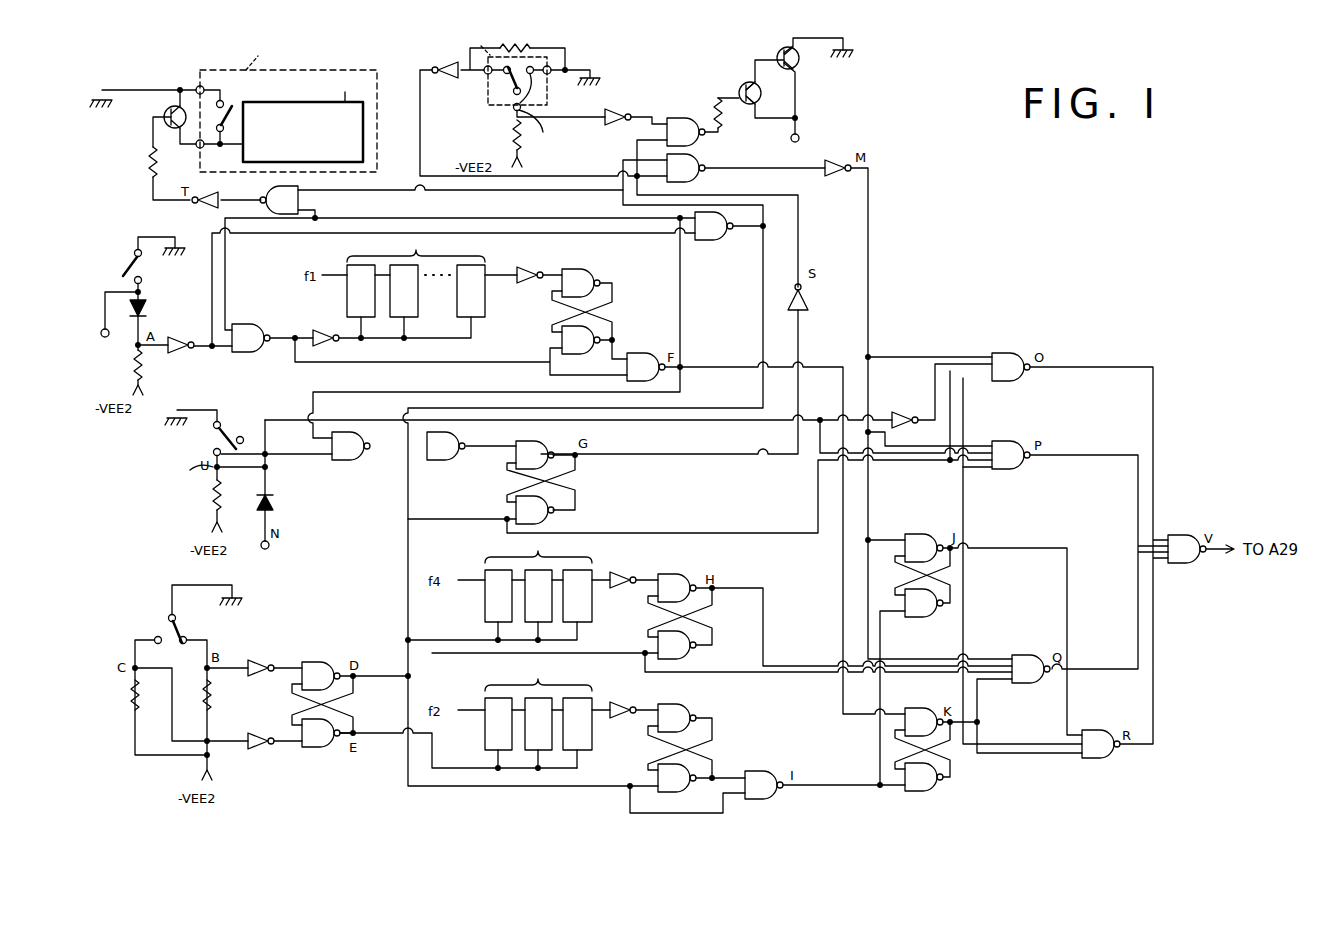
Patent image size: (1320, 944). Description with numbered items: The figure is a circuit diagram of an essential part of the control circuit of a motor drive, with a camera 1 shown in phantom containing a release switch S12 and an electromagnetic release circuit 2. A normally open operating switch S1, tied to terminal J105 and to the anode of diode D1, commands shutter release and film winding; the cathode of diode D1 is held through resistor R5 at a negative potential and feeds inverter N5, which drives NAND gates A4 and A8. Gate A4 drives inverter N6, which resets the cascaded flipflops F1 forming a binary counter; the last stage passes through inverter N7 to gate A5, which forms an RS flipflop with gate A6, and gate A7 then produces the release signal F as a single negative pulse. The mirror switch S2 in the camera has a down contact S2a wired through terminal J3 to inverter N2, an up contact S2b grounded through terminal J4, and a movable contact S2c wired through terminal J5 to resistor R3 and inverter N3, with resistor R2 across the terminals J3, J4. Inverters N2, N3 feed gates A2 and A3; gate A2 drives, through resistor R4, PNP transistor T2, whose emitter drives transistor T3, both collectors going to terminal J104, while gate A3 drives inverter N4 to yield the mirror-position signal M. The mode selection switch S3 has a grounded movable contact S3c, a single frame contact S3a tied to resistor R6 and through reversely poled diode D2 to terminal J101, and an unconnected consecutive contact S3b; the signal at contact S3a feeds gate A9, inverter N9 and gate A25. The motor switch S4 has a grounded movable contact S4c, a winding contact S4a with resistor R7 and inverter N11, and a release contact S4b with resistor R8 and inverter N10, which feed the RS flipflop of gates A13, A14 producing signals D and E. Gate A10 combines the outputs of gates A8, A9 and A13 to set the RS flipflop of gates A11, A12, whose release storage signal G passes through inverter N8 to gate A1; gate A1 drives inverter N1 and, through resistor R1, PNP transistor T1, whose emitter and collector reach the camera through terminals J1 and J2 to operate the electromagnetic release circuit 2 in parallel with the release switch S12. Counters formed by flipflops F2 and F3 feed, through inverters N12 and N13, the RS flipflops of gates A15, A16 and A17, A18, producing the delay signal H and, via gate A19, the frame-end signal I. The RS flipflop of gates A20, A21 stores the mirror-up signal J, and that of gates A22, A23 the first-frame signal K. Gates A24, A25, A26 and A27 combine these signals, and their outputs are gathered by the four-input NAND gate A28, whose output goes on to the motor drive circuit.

The camera 1 is at (373, 100).
The electromagnetic release circuit 2 is at (303, 122).
The terminal J1 is at (186, 82).
The terminal J2 is at (186, 150).
The terminal J3 is at (484, 66).
The terminal J4 is at (551, 66).
The terminal J5 is at (507, 109).
The terminal J101 is at (264, 557).
The terminal J104 is at (786, 148).
The terminal J105 is at (106, 344).
The operating switch S1 is at (128, 266).
The release switch S12 is at (226, 103).
The mirror switch S2 is at (500, 110).
The down contact S2a is at (503, 90).
The up contact S2b is at (538, 86).
The movable contact S2c is at (536, 130).
The photographing mode selection switch S3 is at (234, 424).
The single frame contact S3a is at (186, 467).
The consecutive mode contact S3b is at (244, 435).
The movable contact S3c is at (213, 452).
The motor switch S4 is at (154, 622).
The winding contact S4a is at (155, 636).
The release contact S4b is at (186, 638).
The movable contact S4c is at (189, 609).
The PNP transistor T1 is at (165, 112).
The PNP transistor T2 is at (741, 86).
The PNP transistor T3 is at (799, 64).
The resistor R1 is at (148, 158).
The resistor R2 is at (522, 46).
The resistor R3 is at (512, 142).
The resistor R4 is at (722, 128).
The resistor R5 is at (143, 374).
The resistor R6 is at (212, 496).
The resistor R7 is at (130, 700).
The resistor R8 is at (212, 702).
The diode D1 is at (142, 306).
The reversely poled diode D2 is at (274, 504).
The bank of flipflops F1 is at (416, 277).
The bank of flipflops F2 is at (538, 581).
The bank of flipflops F3 is at (538, 709).
The inverter N1 is at (210, 208).
The inverter N2 is at (441, 81).
The inverter N3 is at (612, 110).
The inverter N4 is at (836, 162).
The inverter N5 is at (181, 334).
The inverter N6 is at (319, 325).
The inverter N7 is at (522, 288).
The inverter N8 is at (805, 298).
The inverter N9 is at (898, 416).
The inverter N10 is at (256, 664).
The inverter N11 is at (256, 737).
The inverter N12 is at (615, 592).
The inverter N13 is at (615, 722).
The NAND gate A1 is at (268, 188).
The three input NAND gate A2 is at (684, 120).
The NAND gate A3 is at (695, 162).
The NAND gate A4 is at (256, 322).
The NAND gate A5 is at (580, 272).
The NAND gate A6 is at (579, 356).
The NAND gate A7 is at (638, 356).
The NAND gate A8 is at (706, 240).
The NAND gate A9 is at (348, 458).
The three input NAND gate A10 is at (444, 458).
The NAND gate A11 is at (526, 442).
The NAND gate A12 is at (520, 510).
The NAND gate A13 is at (312, 666).
The NAND gate A14 is at (312, 746).
The NAND gate A15 is at (671, 578).
The NAND gate A16 is at (680, 658).
The NAND gate A17 is at (671, 708).
The NAND gate A18 is at (672, 790).
The NAND gate A19 is at (759, 778).
The NAND gate A20 is at (923, 536).
The NAND gate A21 is at (922, 618).
The NAND gate A22 is at (912, 710).
The NAND gate A23 is at (910, 790).
The NAND gate A24 is at (1004, 350).
The NAND gate A25 is at (1004, 444).
The NAND gate A26 is at (1026, 688).
The NAND gate A27 is at (1094, 766).
The NAND gate A28 is at (1180, 538).